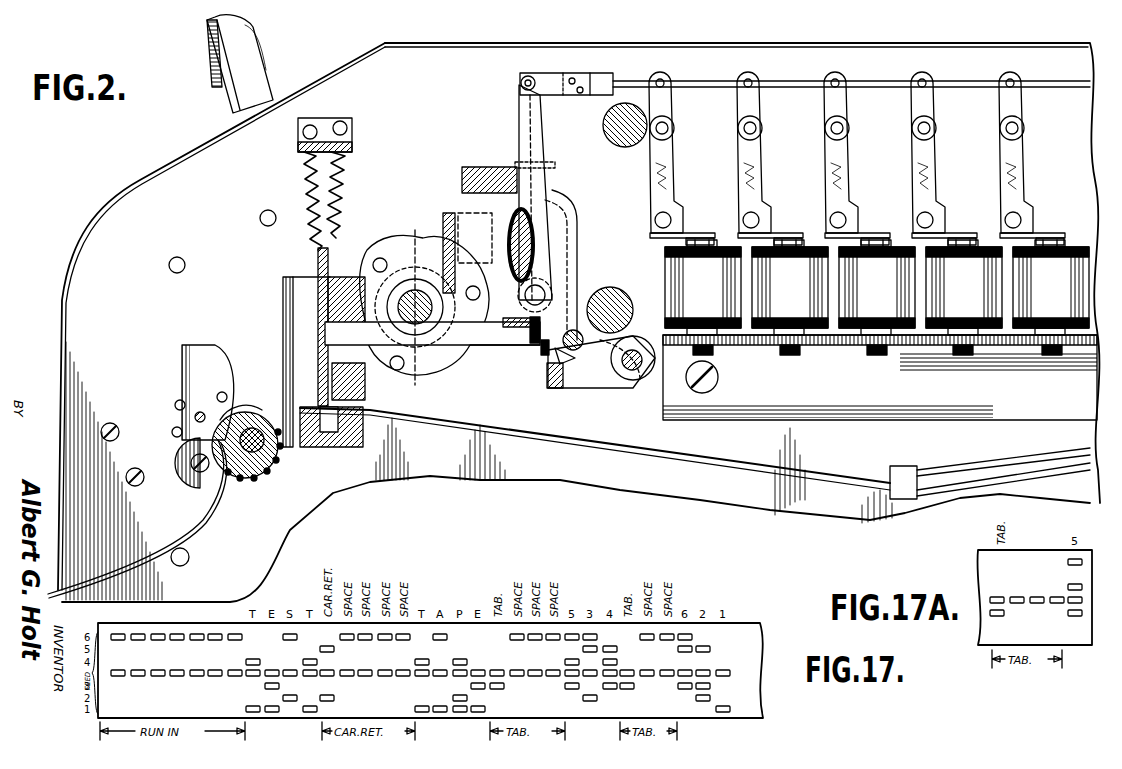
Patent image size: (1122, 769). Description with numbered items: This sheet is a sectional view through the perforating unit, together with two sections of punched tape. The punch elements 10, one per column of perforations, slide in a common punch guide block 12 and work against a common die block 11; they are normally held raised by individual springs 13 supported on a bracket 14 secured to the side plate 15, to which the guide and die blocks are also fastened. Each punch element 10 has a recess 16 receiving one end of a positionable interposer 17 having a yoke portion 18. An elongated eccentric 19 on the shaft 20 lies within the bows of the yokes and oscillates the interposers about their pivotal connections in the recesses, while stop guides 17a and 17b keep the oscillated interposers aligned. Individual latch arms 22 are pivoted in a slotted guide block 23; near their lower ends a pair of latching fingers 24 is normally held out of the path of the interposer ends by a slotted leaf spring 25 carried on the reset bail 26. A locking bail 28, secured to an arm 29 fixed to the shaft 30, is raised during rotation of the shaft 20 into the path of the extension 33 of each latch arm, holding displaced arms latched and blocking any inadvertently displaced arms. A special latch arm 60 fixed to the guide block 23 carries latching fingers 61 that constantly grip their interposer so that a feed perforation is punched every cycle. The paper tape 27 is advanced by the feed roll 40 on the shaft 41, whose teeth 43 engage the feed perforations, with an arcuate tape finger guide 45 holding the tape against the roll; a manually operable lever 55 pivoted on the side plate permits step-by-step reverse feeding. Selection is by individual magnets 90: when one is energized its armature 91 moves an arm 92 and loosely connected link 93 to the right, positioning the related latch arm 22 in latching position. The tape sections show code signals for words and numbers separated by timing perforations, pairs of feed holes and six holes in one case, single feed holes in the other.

The punch elements 10 is at (300, 270).
The die block 11 is at (350, 447).
The punch guide block 12 is at (326, 272).
The springs 13 is at (306, 172).
The bracket 14 is at (325, 122).
The side plate 15 is at (434, 46).
The recess 16 is at (347, 283).
The interposer 17 is at (475, 350).
The stop guide 17a is at (450, 266).
The stop guide 17b is at (512, 332).
The yoke portion 18 is at (405, 270).
The eccentric 19 is at (415, 313).
The shaft 20 is at (426, 318).
The latch arms 22 is at (543, 148).
The slotted guide block 23 is at (461, 178).
The latching fingers 24 is at (543, 352).
The slotted leaf spring 25 is at (524, 282).
The reset bail 26 is at (524, 214).
The paper tape 27 is at (556, 440).
The locking bail 28 is at (550, 380).
The arm 29 is at (598, 380).
The shaft 30 is at (640, 372).
The extension 33 is at (563, 366).
The feed roll 40 is at (262, 470).
The shaft 41 is at (250, 453).
The teeth 43 is at (279, 470).
The tape finger guide 45 is at (237, 410).
The manually operable lever 55 is at (212, 58).
The special latch arm 60 is at (578, 208).
The latching fingers 61 is at (526, 345).
The magnets 90 is at (680, 270).
The armature 91 is at (698, 232).
The arm 92 is at (757, 167).
The link 93 is at (708, 82).